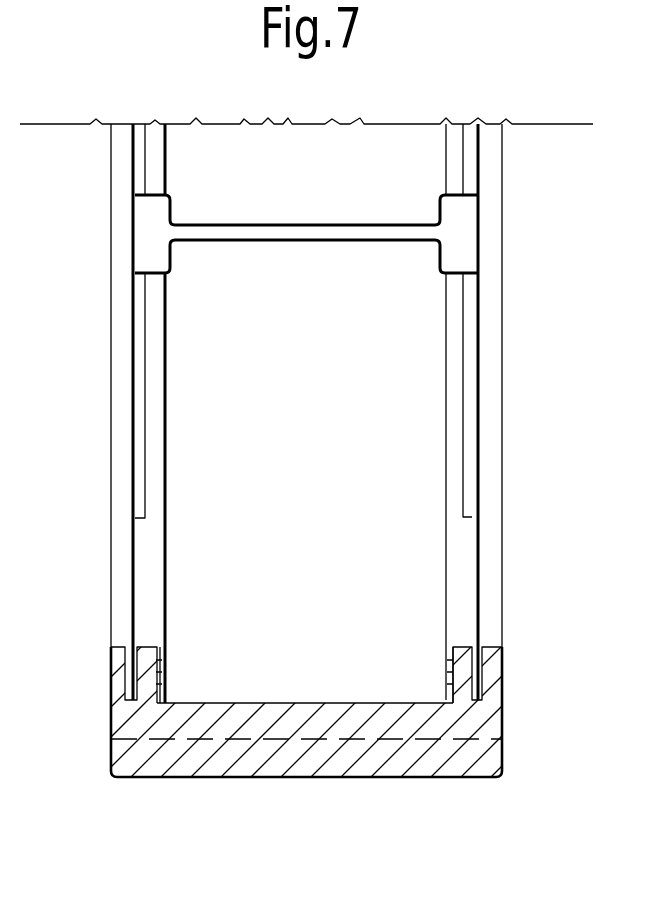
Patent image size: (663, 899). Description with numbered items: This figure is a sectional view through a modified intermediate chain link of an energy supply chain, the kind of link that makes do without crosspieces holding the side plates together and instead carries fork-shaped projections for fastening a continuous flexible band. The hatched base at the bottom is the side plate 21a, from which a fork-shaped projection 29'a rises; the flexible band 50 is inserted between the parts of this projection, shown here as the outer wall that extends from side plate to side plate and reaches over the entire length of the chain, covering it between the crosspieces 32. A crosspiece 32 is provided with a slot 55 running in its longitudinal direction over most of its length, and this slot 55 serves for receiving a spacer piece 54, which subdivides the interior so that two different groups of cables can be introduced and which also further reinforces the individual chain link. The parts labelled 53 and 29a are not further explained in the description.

The flexible band 50 is at (488, 537).
The crosspiece 32 is at (153, 344).
The slot 55 is at (468, 413).
The spacer piece 54 is at (298, 233).
The collar 53 is at (462, 217).
The side plate 21a is at (278, 758).
The support block 29a is at (120, 658).
The fork-shaped projection 29'a is at (241, 650).